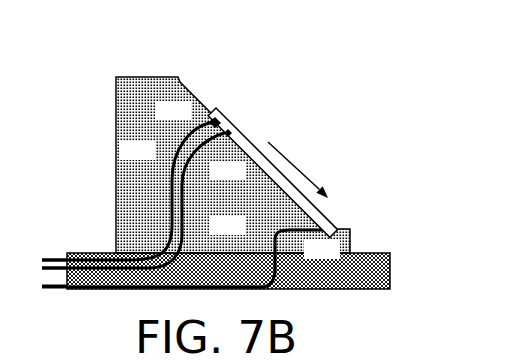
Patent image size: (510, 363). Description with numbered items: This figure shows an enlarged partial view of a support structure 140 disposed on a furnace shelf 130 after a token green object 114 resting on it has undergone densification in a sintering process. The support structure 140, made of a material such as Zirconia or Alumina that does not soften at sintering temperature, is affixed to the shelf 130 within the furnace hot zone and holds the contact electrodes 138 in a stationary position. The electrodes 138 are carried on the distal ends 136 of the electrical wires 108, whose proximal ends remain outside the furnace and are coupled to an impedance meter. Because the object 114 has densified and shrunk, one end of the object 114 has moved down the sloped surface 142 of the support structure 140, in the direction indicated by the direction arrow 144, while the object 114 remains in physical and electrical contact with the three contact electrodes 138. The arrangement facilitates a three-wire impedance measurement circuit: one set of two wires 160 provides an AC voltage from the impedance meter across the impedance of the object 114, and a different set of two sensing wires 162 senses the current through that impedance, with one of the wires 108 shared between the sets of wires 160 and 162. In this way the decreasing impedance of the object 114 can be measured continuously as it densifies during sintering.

The electrical wires 108 is at (58, 258).
The token green object 114 is at (238, 130).
The furnace shelf 130 is at (368, 252).
The distal ends of the electrical wires 136 is at (168, 131).
The contact electrodes 138 is at (212, 121).
The support structure 140 is at (125, 77).
The surface of the support structure 142 is at (263, 161).
The direction arrow 144 is at (292, 162).
The set of two wires 160 is at (173, 158).
The set of two sensing wires 162 is at (300, 251).